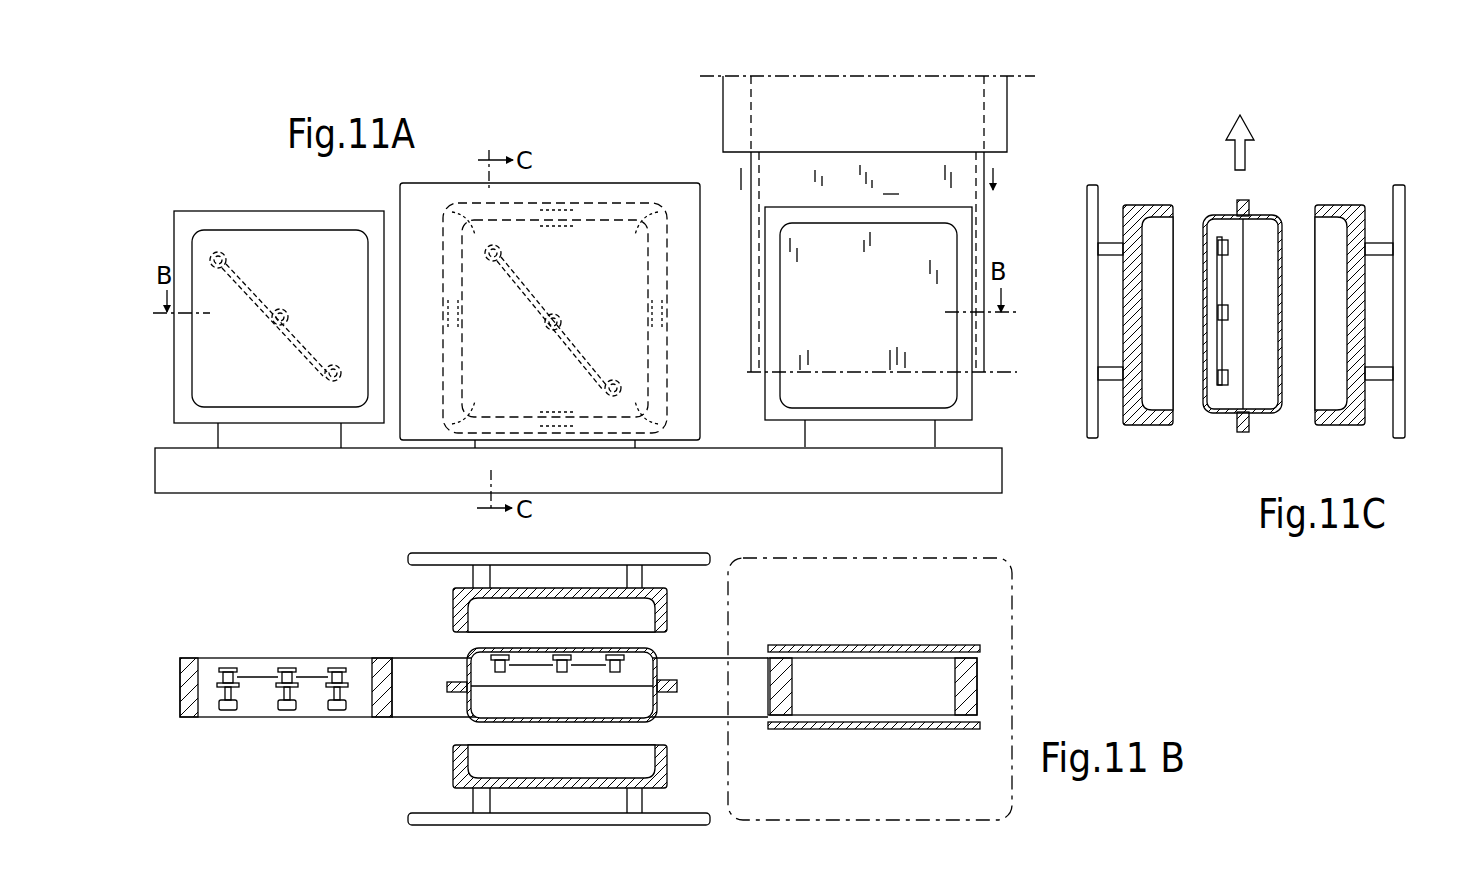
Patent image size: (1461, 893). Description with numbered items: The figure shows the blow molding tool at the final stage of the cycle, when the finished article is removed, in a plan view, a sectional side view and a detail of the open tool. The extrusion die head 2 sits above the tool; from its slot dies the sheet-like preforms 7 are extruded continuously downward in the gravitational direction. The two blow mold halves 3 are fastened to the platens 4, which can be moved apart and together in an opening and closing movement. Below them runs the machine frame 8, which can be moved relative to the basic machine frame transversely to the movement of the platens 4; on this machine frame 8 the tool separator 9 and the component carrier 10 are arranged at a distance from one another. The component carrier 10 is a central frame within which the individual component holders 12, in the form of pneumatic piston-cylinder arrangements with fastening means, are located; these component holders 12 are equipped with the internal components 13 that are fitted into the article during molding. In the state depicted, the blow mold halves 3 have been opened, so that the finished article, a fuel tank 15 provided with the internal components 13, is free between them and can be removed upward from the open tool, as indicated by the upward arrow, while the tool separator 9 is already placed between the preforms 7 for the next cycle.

In FIG. 11A, the extrusion die head 2 is at (1007, 118).
In FIG. 11A, the blow mold halves 3 is at (655, 292).
In FIG. 11B, the blow mold halves 3 is at (660, 613).
In FIG. 11C, the blow mold halves 3 is at (1133, 205).
In FIG. 11A, the platens 4 is at (678, 193).
In FIG. 11B, the platens 4 is at (433, 820).
In FIG. 11C, the platens 4 is at (1092, 183).
In FIG. 11A, the preforms 7 is at (879, 262).
In FIG. 11B, the preforms 7 is at (893, 645).
In FIG. 11A, the machine frame 8 is at (733, 470).
In FIG. 11B, the machine frame 8 is at (422, 705).
In FIG. 11A, the tool separator 9 is at (975, 383).
In FIG. 11B, the tool separator 9 is at (972, 680).
In FIG. 11A, the component carrier 10 is at (364, 410).
In FIG. 11B, the component carrier 10 is at (378, 658).
In FIG. 11B, the component holders 12 is at (290, 700).
In FIG. 11B, the internal components 13 is at (288, 668).
In FIG. 11A, the fuel tank 15 is at (590, 205).
In FIG. 11B, the fuel tank 15 is at (658, 712).
In FIG. 11C, the fuel tank 15 is at (1270, 210).